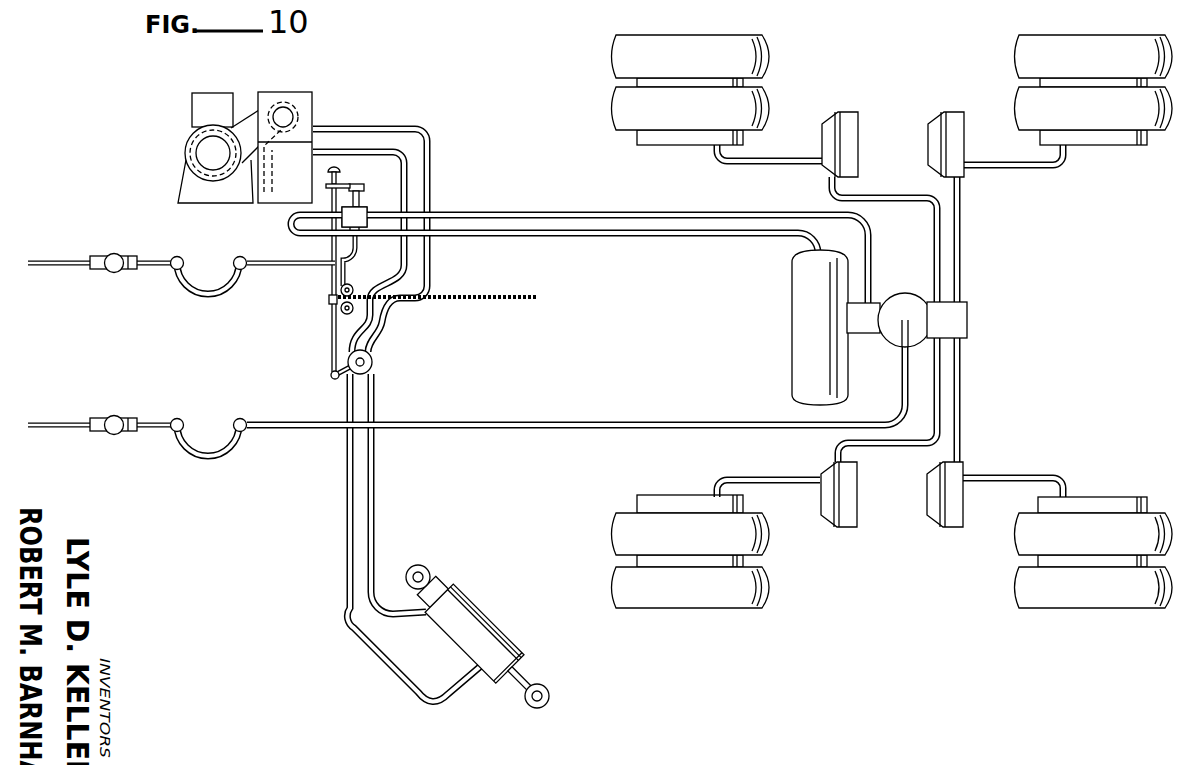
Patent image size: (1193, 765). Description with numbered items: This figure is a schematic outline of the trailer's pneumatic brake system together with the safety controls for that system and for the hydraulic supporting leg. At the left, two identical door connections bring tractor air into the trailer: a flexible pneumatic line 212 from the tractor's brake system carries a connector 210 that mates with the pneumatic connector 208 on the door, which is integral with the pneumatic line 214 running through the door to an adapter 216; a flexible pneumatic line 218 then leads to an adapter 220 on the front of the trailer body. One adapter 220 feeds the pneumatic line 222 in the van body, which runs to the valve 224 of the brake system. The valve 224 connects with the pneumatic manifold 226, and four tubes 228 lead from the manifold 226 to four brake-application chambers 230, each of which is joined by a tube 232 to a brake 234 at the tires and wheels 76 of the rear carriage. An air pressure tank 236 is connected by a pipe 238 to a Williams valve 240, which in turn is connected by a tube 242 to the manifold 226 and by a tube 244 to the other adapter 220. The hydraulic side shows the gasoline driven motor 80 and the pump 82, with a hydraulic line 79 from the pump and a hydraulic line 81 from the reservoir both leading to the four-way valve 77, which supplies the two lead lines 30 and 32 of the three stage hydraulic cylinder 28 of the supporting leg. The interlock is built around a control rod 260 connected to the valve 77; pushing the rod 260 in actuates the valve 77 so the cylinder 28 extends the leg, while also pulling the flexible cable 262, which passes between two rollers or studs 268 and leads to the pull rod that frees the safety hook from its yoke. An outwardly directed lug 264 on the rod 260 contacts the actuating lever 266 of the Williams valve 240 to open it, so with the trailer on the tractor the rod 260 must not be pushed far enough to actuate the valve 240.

The hydraulic cylinder 28 is at (465, 606).
The lead line 30 is at (349, 626).
The lead line 32 is at (379, 500).
The tires and wheels 76 is at (760, 105).
The four-way valve 77 is at (373, 362).
The hydraulic line 79 is at (396, 126).
The gasoline driven motor 80 is at (190, 144).
The hydraulic line 81 is at (403, 254).
The pump 82 is at (286, 104).
The pneumatic connector 208 is at (131, 270).
The connector 210 is at (101, 256).
The flexible pneumatic line 212 is at (53, 260).
The pneumatic line 214 is at (152, 258).
The adapter 216 is at (184, 259).
The flexible pneumatic line 218 is at (214, 297).
The adapter 220 is at (246, 257).
The pneumatic line 222 is at (548, 428).
The valve 224 is at (906, 300).
The pneumatic manifold 226 is at (968, 320).
The piping or tubing 228 is at (962, 378).
The brake-application chamber 230 is at (932, 133).
The tube or pipe 232 is at (1033, 480).
The brake 234 is at (1118, 142).
The air pressure tank 236 is at (793, 328).
The line or pipe 238 is at (710, 236).
The Williams valve 240 is at (297, 216).
The pipe or tube 242 is at (513, 211).
The pipe or tube 244 is at (274, 266).
The control rod 260 is at (332, 337).
The flexible cable 262 is at (502, 300).
The lug 264 is at (345, 183).
The actuating lever 266 is at (362, 196).
The rollers or studs 268 is at (329, 301).